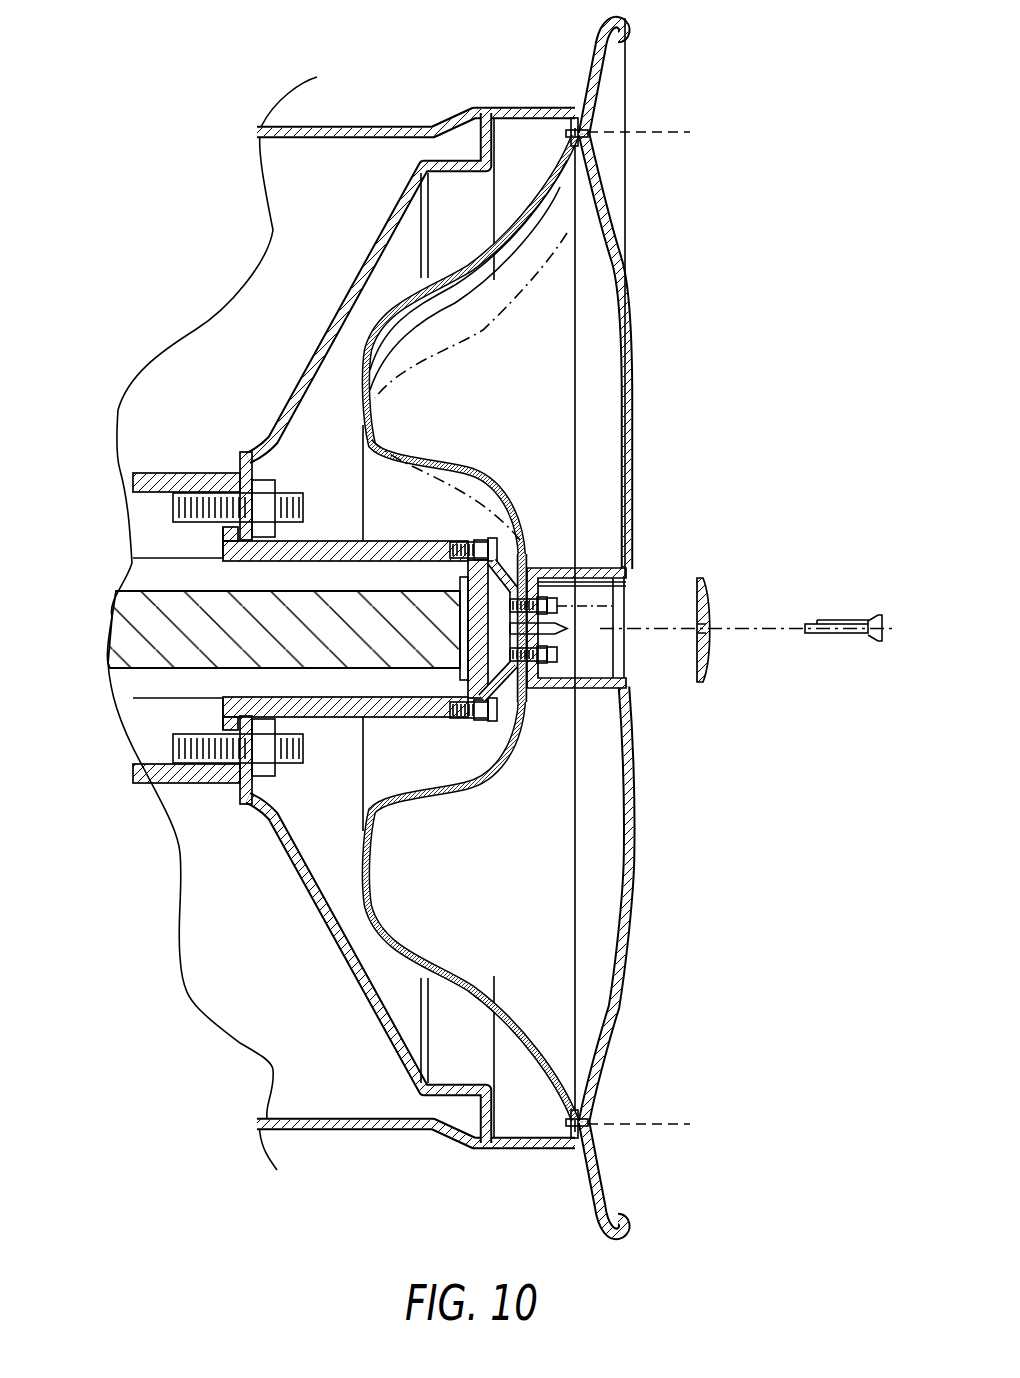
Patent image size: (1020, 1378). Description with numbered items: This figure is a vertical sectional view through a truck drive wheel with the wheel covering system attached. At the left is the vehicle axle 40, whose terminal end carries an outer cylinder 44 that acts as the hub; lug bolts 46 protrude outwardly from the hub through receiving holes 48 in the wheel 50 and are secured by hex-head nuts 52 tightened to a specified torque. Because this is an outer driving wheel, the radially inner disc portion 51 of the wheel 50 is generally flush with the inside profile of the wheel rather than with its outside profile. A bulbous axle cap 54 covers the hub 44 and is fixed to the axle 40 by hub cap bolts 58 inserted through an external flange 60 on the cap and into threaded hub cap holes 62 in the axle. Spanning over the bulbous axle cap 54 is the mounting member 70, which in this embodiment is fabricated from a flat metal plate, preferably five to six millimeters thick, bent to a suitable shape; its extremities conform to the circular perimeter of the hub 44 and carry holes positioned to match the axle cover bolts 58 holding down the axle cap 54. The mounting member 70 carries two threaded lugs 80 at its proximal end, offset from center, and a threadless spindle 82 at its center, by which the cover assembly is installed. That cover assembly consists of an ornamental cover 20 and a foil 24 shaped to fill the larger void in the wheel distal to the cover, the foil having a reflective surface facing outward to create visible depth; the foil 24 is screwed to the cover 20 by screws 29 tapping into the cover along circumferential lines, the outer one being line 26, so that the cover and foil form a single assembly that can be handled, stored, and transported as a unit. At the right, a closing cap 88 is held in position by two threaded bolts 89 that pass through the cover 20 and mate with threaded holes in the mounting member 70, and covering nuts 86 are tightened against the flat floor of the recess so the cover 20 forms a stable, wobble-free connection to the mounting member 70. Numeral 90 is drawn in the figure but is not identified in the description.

The ornamental cover 20 is at (627, 285).
The foil 24 is at (370, 378).
The outer circumferential line 26 is at (655, 133).
The screws 29 is at (567, 133).
The axle 40 is at (160, 528).
The outer cylinder 44 is at (340, 716).
The lug bolts 46 is at (300, 502).
The receiving holes 48 is at (240, 790).
The wheel 50 is at (390, 127).
The radially inner disc portion 51 is at (243, 742).
The hex-head nuts 52 is at (263, 502).
The axle cap 54 is at (418, 700).
The hub cap bolts 58 is at (497, 548).
The external flange 60 is at (473, 560).
The threaded hub cap holes 62 is at (480, 540).
The mounting member 70 is at (513, 700).
The threaded lugs 80 is at (552, 660).
The threadless spindle 82 is at (563, 628).
The covering nuts 86 is at (543, 602).
The closing cap 88 is at (710, 605).
The threaded bolts 89 is at (853, 623).
The hub bracket 90 is at (610, 647).